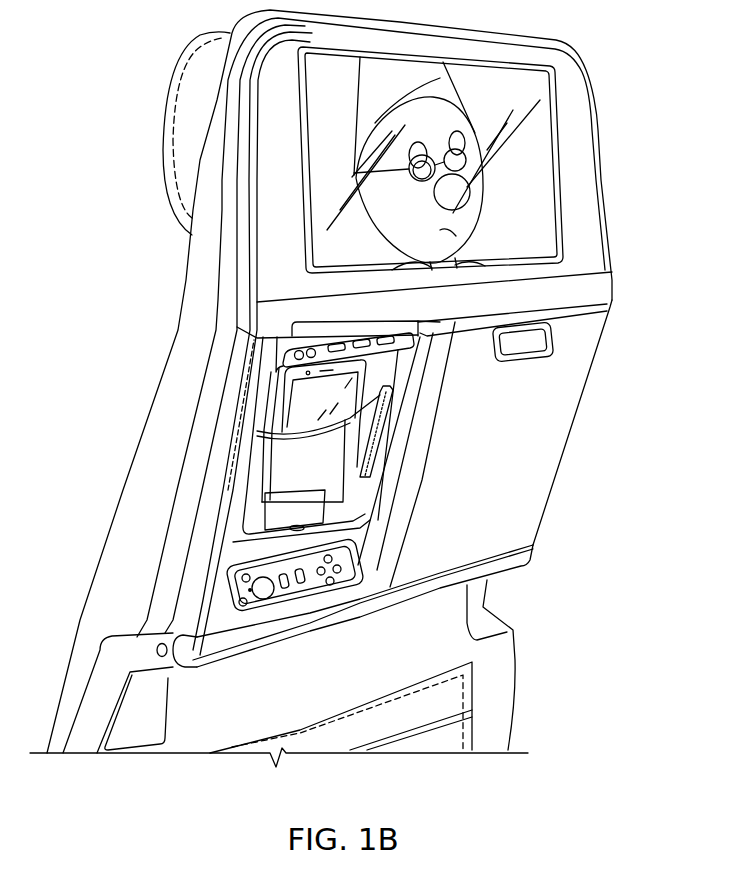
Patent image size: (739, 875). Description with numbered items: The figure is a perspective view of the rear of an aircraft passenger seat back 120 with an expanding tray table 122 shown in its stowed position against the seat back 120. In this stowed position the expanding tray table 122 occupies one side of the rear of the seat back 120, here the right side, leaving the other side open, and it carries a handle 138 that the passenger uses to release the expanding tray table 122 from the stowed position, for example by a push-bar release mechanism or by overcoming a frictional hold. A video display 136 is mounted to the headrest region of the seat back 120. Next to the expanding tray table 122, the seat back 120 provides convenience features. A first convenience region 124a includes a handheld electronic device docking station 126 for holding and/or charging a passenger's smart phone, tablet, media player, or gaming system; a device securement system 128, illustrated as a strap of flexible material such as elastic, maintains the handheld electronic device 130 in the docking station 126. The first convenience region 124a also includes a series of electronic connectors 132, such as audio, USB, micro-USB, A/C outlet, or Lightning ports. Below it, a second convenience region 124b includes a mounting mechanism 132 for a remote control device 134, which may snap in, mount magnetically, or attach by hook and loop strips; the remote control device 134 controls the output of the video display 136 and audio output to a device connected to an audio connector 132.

The seat back 120 is at (98, 75).
The expanding tray table 122 is at (529, 465).
The first convenience region 124a is at (248, 473).
The second convenience region 124b is at (227, 598).
The handheld electronic device docking station 126 is at (365, 520).
The device securement system 128 is at (325, 473).
The handheld electronic device 130 is at (344, 406).
The electronic connectors 132 is at (352, 322).
The remote control device 134 is at (307, 598).
The video display 136 is at (543, 250).
The handle 138 is at (513, 360).